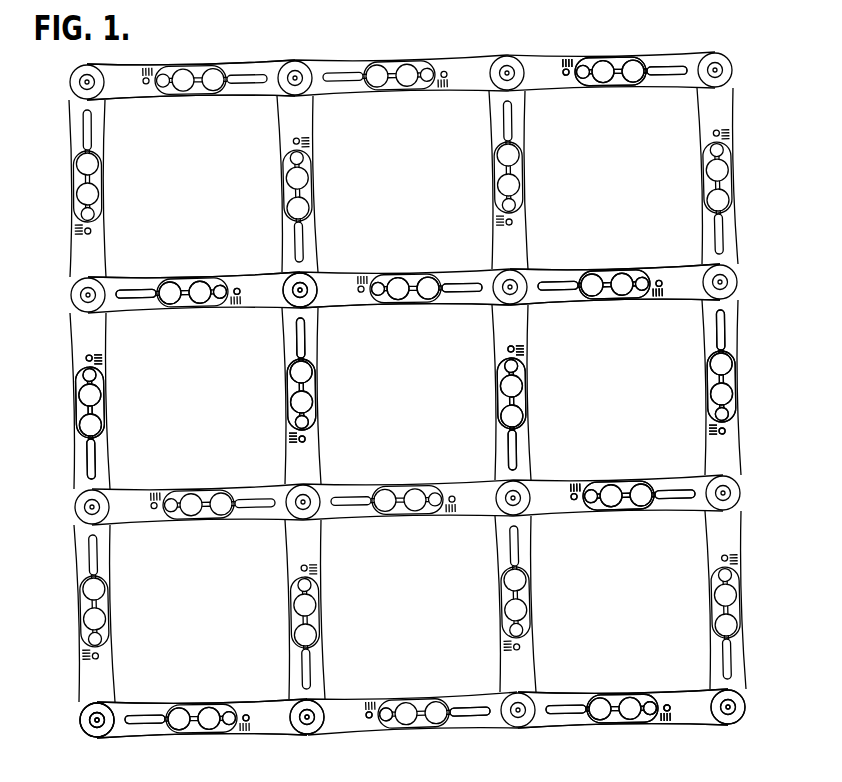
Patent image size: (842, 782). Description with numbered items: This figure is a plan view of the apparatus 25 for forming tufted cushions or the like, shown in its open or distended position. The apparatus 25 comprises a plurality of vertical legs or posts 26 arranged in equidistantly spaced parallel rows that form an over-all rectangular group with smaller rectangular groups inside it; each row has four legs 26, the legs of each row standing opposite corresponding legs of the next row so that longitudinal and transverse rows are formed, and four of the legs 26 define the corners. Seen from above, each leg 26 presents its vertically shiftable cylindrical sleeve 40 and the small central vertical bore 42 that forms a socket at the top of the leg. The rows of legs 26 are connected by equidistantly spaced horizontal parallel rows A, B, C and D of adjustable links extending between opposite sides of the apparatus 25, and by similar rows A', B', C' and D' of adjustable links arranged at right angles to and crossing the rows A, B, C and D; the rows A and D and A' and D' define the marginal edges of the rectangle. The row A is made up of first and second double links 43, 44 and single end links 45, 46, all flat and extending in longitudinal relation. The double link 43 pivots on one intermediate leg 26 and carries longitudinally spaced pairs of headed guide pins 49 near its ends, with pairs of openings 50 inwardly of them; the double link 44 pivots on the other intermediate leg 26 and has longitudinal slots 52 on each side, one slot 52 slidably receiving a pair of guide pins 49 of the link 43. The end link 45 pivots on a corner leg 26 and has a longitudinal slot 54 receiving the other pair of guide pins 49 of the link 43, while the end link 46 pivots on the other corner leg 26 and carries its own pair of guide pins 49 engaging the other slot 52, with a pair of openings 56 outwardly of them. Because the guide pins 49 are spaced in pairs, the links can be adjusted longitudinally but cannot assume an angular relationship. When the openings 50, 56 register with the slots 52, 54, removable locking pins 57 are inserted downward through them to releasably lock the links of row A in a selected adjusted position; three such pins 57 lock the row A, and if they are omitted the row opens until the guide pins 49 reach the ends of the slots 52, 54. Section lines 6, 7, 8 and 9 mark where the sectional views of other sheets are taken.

The apparatus 25 is at (256, 58).
The legs or posts 26 is at (310, 734).
The cylindrical sleeve 40 is at (95, 724).
The central vertical bore 42 is at (303, 292).
The first double link 43 is at (350, 303).
The second double link 44 is at (570, 298).
The single end link 45 is at (137, 279).
The single end link 46 is at (677, 291).
The headed guide pins 49 is at (196, 308).
The openings 50 is at (240, 304).
The longitudinal slots 52 is at (477, 296).
The longitudinal slot 54 is at (133, 299).
The openings 56 is at (672, 701).
The removable locking pins 57 is at (220, 287).
The horizontal row of links A is at (608, 691).
The horizontal row of links B is at (633, 480).
The horizontal row of links C is at (600, 267).
The horizontal row of links D is at (625, 55).
The row of links A' is at (71, 417).
The row of links B' is at (281, 380).
The row of links C' is at (487, 408).
The row of links D' is at (699, 372).
The section line 6- 6 is at (75, 717).
The section line 7- 7 is at (72, 507).
The section line 8- 8 is at (715, 47).
The section line 9- 9 is at (505, 47).